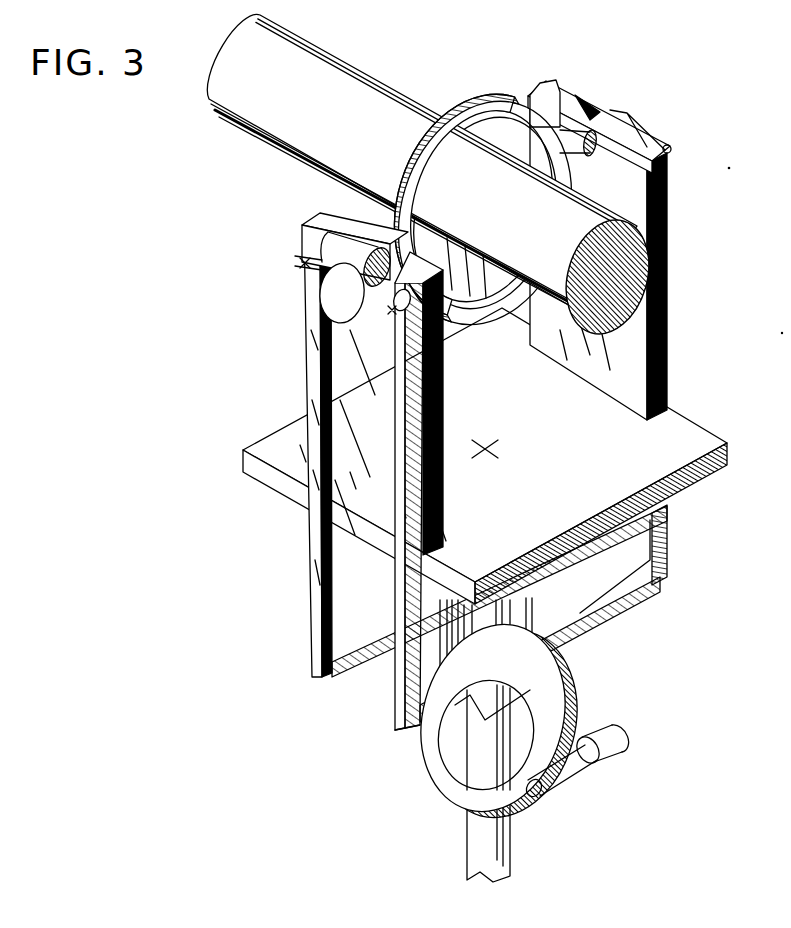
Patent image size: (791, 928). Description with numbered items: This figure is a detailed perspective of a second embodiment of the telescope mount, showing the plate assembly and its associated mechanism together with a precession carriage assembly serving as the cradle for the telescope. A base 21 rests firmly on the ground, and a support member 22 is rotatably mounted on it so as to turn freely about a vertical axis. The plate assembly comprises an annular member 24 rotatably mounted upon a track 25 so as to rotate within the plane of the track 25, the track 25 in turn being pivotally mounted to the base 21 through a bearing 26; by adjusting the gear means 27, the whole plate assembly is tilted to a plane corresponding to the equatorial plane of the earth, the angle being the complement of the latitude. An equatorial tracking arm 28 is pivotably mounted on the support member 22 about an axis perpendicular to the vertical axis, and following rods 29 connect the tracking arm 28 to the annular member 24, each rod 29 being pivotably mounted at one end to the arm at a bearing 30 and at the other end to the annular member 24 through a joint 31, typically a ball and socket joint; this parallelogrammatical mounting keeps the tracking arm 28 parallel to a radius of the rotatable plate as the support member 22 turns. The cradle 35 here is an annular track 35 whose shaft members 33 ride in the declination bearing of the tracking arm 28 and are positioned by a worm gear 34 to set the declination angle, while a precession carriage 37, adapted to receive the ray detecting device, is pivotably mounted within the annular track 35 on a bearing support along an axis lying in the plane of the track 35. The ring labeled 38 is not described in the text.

The base 21 is at (487, 617).
The support member 22 is at (548, 440).
The annular member 24 is at (435, 783).
The track 25 is at (470, 723).
The bearing 26 is at (500, 716).
The gear means 27 is at (562, 770).
The equatorial tracking arm 28 is at (648, 118).
The following rods 29 is at (403, 683).
The bearing 30 is at (302, 264).
The joint 31 is at (522, 722).
The shaft 33 is at (335, 201).
The worm gear 34 is at (300, 260).
The cradle 35 is at (456, 112).
The precession carriage 37 is at (533, 138).
The ring 38 is at (500, 94).